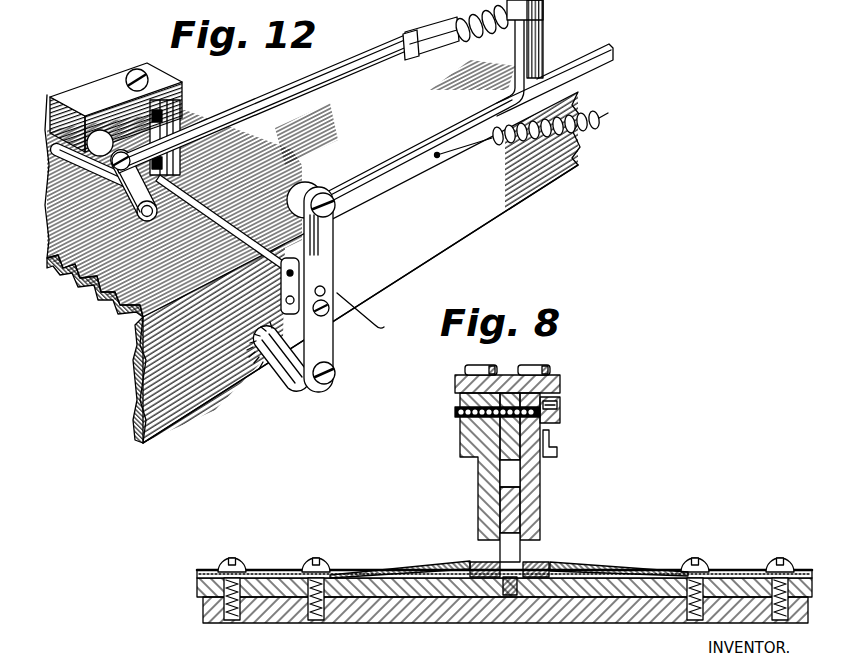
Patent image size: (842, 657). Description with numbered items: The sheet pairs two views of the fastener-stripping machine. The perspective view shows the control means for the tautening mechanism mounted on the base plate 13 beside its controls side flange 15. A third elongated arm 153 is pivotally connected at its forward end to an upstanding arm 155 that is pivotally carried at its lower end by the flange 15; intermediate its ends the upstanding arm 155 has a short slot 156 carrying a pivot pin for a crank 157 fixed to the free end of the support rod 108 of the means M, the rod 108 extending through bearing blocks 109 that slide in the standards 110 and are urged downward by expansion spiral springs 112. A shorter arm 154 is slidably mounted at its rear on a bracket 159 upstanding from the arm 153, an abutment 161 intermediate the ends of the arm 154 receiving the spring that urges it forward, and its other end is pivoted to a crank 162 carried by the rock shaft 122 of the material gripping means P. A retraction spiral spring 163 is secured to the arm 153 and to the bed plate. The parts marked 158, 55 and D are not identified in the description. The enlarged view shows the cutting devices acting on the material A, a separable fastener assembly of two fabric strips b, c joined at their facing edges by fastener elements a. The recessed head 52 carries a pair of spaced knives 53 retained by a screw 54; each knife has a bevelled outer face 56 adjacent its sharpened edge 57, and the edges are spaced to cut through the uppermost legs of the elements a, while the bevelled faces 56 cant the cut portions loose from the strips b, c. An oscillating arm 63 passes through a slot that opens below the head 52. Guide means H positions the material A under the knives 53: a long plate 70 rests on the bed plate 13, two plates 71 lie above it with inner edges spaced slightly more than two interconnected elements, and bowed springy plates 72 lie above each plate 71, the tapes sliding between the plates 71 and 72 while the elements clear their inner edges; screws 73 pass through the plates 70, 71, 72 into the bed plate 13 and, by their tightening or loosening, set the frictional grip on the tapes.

In FIG. 12, the base plate 13 is at (97, 292).
In FIG. 8, the base plate 13 is at (437, 620).
In FIG. 12, the controls side flange 15 is at (453, 243).
In FIG. 12, the support rod 108 is at (238, 212).
In FIG. 12, the bearing blocks 109 is at (205, 160).
In FIG. 12, the standard 110 is at (183, 86).
In FIG. 12, the expansion spiral springs 112 is at (183, 103).
In FIG. 12, the rock shaft 122 is at (62, 170).
In FIG. 12, the third elongated arm 153 is at (386, 152).
In FIG. 12, the shorter arm 154 is at (375, 62).
In FIG. 12, the upstanding arm 155 is at (332, 243).
In FIG. 12, the short slot 156 is at (330, 292).
In FIG. 12, the crank 157 is at (282, 293).
In FIG. 12, the rod 158 is at (252, 5).
In FIG. 12, the bracket 159 is at (537, 45).
In FIG. 12, the abutment 161 is at (468, 21).
In FIG. 12, the crank 162 is at (127, 220).
In FIG. 12, the retraction spiral spring 163 is at (593, 133).
In FIG. 8, the recessed head 52 is at (458, 428).
In FIG. 8, the knives 53 is at (483, 472).
In FIG. 8, the screw 54 is at (560, 413).
In FIG. 8, the bolt 55 is at (507, 439).
In FIG. 8, the bevelled face 56 is at (483, 555).
In FIG. 8, the sharpened edge 57 is at (517, 562).
In FIG. 8, the oscillating arm 63 is at (510, 512).
In FIG. 8, the plate 70 is at (280, 587).
In FIG. 8, the plates 71 is at (207, 570).
In FIG. 8, the springy plate 72 is at (253, 573).
In FIG. 8, the screws 73 is at (303, 567).
In FIG. 8, the material A is at (437, 560).
In FIG. 8, the guide means H is at (287, 553).
In FIG. 12, the means M is at (100, 71).
In FIG. 12, the material gripping means P is at (66, 140).
In FIG. 12, the deck D is at (128, 423).
In FIG. 8, the separable fastener elements a is at (470, 548).
In FIG. 8, the fabric strip b is at (420, 577).
In FIG. 8, the fabric strip c is at (593, 570).